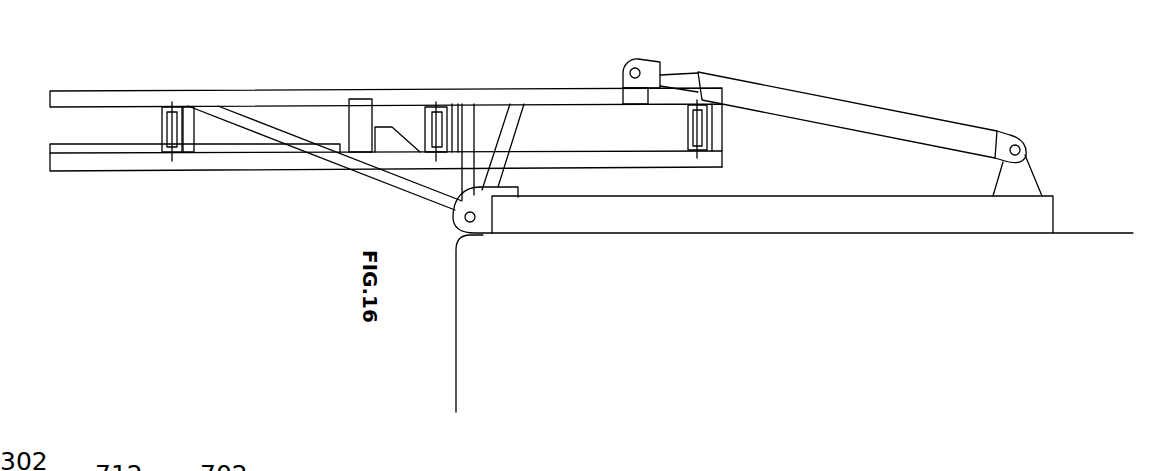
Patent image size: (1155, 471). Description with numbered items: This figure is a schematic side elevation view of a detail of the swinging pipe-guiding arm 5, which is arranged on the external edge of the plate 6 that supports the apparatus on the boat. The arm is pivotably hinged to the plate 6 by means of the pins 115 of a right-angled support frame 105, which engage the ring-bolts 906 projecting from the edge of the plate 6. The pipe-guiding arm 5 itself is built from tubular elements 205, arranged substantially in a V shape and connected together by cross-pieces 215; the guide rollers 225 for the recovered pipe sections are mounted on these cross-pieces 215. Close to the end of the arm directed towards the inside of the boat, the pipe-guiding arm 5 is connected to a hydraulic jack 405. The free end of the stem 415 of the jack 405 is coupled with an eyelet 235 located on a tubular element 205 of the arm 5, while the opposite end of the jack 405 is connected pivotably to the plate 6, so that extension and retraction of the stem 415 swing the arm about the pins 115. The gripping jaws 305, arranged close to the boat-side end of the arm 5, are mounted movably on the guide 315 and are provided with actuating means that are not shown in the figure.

The pipe-guiding arm 5 is at (305, 90).
The plate 6 is at (671, 226).
The right-angled support frame 105 is at (447, 200).
The pins 115 is at (487, 215).
The tubular elements 205 is at (84, 97).
The cross-pieces 215 is at (188, 158).
The guide rollers 225 is at (164, 118).
The eyelet 235 is at (623, 89).
The gripping jaws 305 is at (360, 115).
The guide 315 is at (93, 153).
The hydraulic jack 405 is at (833, 105).
The stem 415 is at (685, 73).
The ring-bolts 906 is at (480, 228).